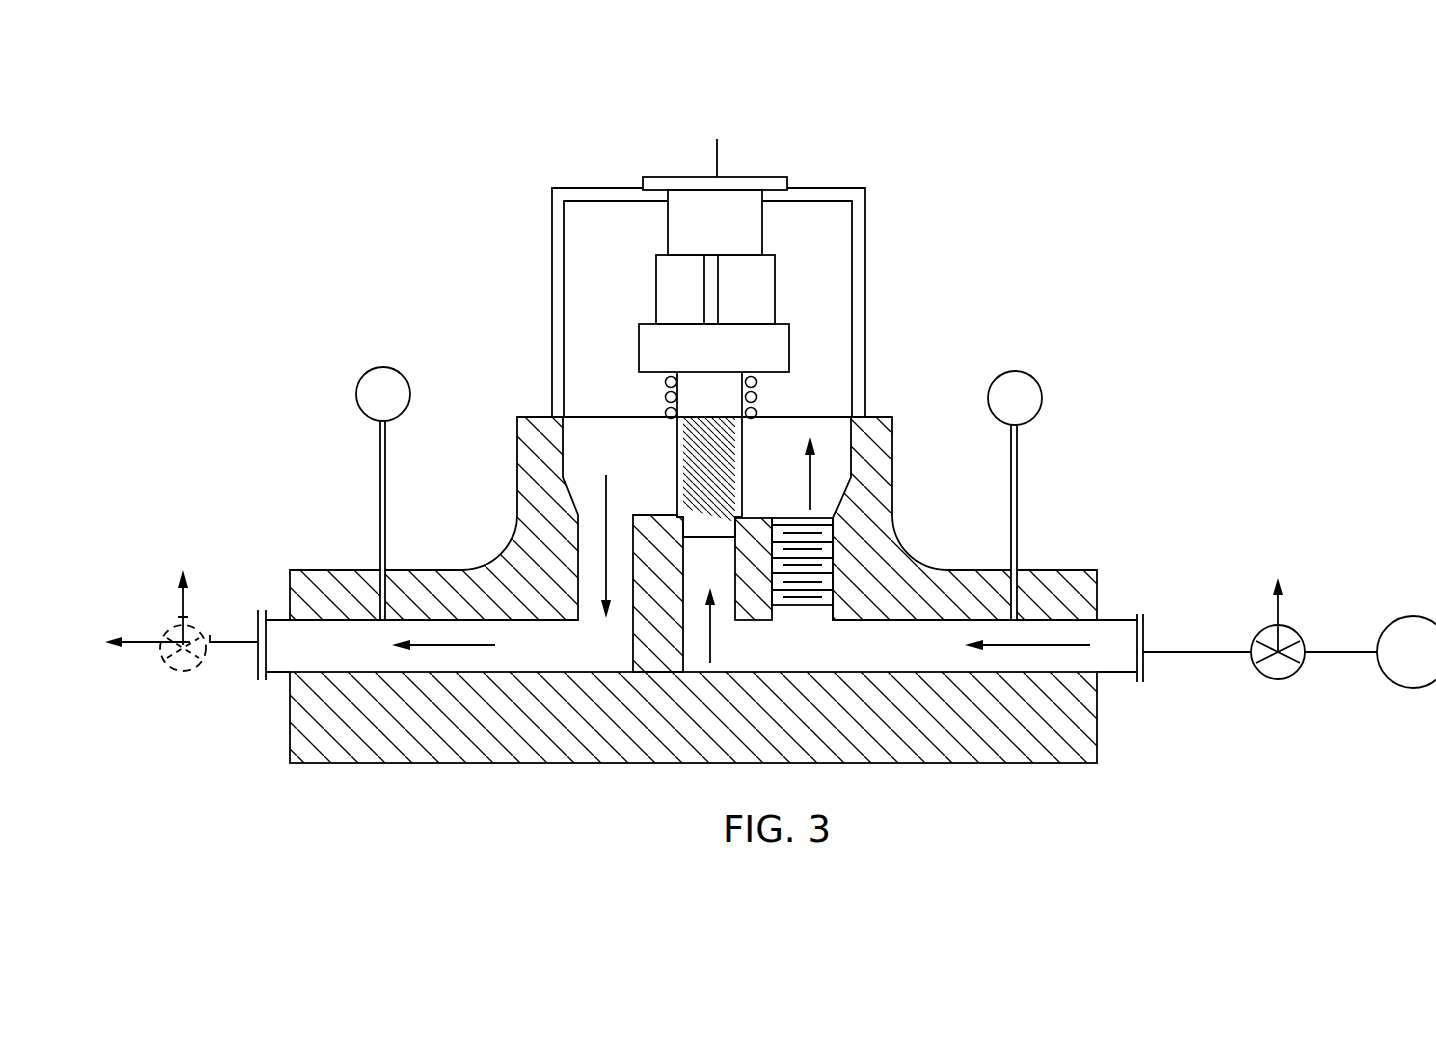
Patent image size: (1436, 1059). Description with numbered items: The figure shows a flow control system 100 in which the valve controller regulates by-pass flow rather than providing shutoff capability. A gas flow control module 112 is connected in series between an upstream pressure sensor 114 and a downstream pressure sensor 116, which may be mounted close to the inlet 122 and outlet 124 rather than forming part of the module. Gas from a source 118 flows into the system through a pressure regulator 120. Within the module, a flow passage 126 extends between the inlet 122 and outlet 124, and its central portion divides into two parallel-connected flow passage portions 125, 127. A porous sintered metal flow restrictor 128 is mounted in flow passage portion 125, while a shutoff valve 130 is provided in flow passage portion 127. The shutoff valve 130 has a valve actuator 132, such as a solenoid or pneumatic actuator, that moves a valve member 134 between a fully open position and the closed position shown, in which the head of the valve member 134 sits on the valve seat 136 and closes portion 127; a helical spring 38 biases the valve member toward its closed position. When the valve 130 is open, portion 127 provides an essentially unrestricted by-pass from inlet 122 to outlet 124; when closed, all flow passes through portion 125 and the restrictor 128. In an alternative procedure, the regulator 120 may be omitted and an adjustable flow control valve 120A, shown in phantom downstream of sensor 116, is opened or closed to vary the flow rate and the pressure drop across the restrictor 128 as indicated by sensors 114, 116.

The flow control system 100 is at (823, 156).
The helical spring 38 is at (665, 396).
The gas flow control module 112 is at (892, 460).
The upstream pressure sensor 114 is at (1022, 371).
The downstream pressure sensor 116 is at (370, 368).
The gas source 118 is at (1412, 617).
The pressure regulator 120 is at (1322, 617).
The adjustable flow control valve 120A is at (228, 602).
The inlet 122 is at (1088, 656).
The outlet 124 is at (286, 661).
The flow passage portion 125 is at (832, 612).
The flow passage 126 is at (572, 623).
The flow passage portion 127 is at (718, 548).
The porous sintered metal flow restrictor 128 is at (795, 608).
The shutoff valve 130 is at (866, 232).
The valve actuator 132 is at (656, 280).
The valve member 134 is at (697, 478).
The valve seat 136 is at (747, 518).